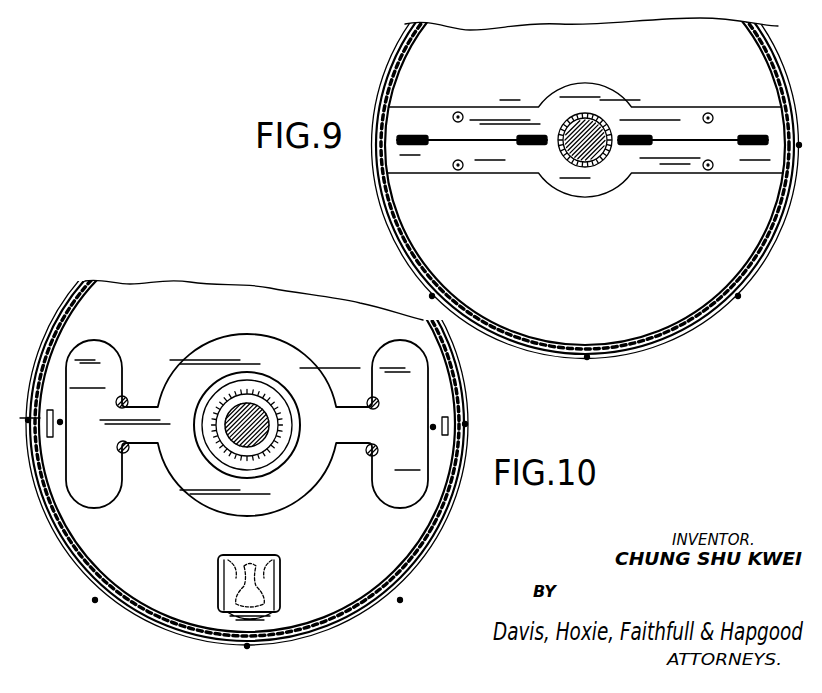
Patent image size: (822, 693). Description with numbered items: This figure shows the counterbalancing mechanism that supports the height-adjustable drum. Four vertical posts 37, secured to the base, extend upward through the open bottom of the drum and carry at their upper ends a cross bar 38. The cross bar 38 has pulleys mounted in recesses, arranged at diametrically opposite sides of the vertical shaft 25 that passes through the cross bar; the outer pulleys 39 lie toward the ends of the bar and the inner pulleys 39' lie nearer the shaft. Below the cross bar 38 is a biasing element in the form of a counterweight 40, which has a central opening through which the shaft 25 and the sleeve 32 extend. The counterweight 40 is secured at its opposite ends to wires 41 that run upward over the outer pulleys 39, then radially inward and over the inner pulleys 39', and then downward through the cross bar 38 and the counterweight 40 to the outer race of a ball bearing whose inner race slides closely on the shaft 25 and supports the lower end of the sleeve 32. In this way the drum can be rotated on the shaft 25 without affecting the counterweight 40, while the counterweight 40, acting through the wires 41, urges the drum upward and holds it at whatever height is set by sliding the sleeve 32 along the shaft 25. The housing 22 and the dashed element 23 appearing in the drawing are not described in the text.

In FIG. 10, the housing box 22 is at (218, 577).
In FIG. 10, the bell (shown dashed) 23 is at (283, 580).
In FIG. 9, the vertical shaft 25 is at (565, 122).
In FIG. 9, the sleeve 32 is at (598, 113).
In FIG. 9, the vertical posts 37 is at (463, 113).
In FIG. 10, the vertical posts 37 is at (127, 397).
In FIG. 9, the cross bar 38 is at (735, 117).
In FIG. 9, the outer pulleys 39 is at (582, 171).
In FIG. 9, the inner pulleys 39' is at (585, 172).
In FIG. 10, the counterweight 40 is at (294, 360).
In FIG. 9, the wires 41 is at (440, 137).
In FIG. 10, the wires 41 is at (60, 421).